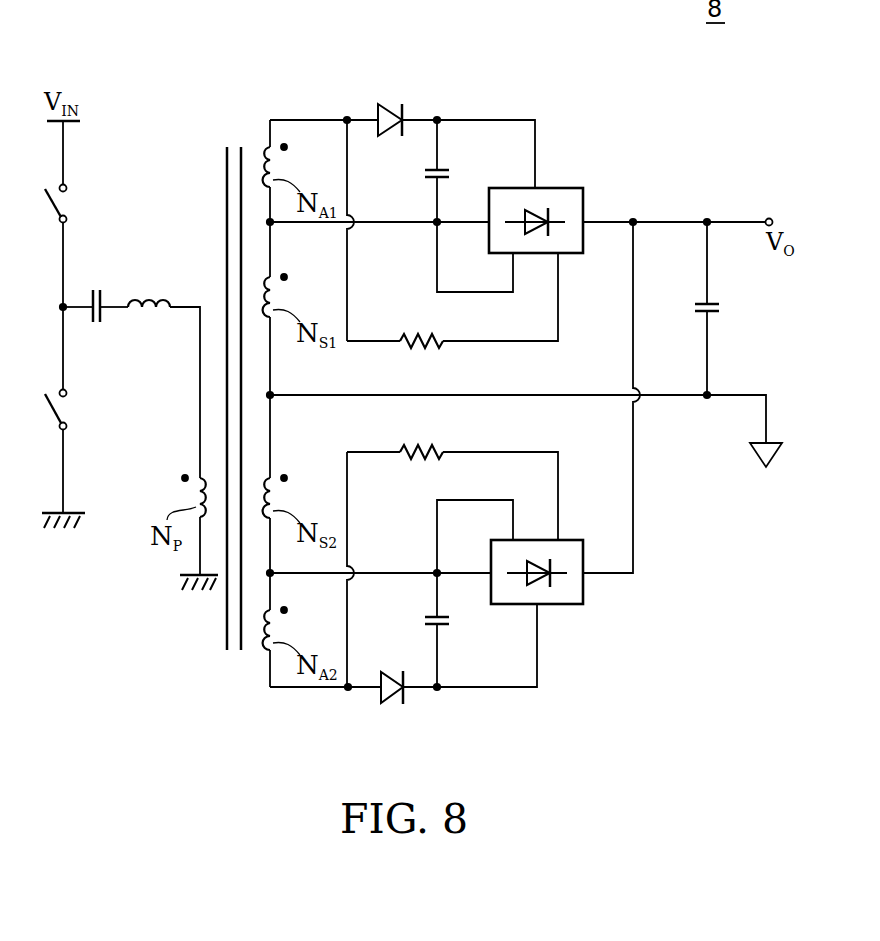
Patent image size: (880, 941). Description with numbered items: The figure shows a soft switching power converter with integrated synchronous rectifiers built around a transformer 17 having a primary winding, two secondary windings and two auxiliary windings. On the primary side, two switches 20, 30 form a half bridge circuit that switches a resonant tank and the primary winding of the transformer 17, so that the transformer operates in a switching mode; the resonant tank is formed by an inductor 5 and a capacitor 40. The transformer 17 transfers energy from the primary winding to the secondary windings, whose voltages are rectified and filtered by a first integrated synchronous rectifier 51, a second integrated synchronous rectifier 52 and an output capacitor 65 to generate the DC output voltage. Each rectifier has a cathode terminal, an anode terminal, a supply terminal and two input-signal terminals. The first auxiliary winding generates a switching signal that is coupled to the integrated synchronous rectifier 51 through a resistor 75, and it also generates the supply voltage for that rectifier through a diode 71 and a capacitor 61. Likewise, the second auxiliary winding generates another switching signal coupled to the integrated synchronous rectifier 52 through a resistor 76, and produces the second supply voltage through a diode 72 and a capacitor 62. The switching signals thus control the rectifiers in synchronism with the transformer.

The inductor 5 is at (148, 292).
The transformer 17 is at (226, 173).
The switch 20 is at (57, 188).
The switch 30 is at (57, 393).
The capacitor 40 is at (96, 290).
The integrated synchronous rectifier 51 is at (510, 188).
The integrated synchronous rectifier 52 is at (512, 604).
The capacitor 61 is at (428, 173).
The capacitor 62 is at (428, 623).
The capacitor 65 is at (697, 306).
The diode 71 is at (392, 103).
The diode 72 is at (393, 704).
The resistor 75 is at (419, 335).
The resistor 76 is at (419, 448).